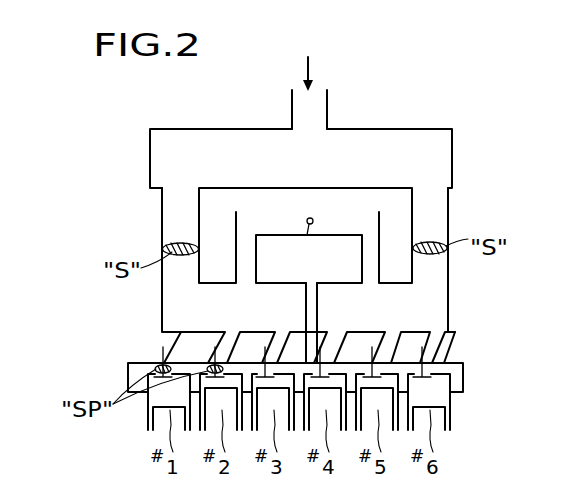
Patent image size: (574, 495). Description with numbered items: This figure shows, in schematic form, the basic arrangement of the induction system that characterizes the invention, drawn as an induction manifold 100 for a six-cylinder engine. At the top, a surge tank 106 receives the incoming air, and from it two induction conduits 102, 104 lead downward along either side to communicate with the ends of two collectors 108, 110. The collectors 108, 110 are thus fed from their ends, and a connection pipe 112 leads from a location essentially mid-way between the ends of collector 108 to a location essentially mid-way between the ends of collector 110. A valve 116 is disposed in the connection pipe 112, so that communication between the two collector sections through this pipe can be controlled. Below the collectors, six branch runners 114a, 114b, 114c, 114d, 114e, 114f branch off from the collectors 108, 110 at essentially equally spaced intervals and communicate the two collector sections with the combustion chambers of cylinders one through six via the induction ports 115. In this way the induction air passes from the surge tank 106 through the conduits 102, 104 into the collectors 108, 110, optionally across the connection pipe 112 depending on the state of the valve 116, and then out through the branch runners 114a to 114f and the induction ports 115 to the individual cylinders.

The induction manifold 100 is at (135, 155).
The induction conduit 102 is at (173, 235).
The induction conduit 104 is at (437, 207).
The surge tank 106 is at (441, 157).
The collector 108 is at (223, 288).
The collector 110 is at (398, 288).
The connection pipe 112 is at (243, 228).
The branch runner 114a is at (174, 345).
The branch runner 114b is at (232, 340).
The branch runner 114c is at (288, 342).
The branch runner 114d is at (342, 342).
The branch runner 114e is at (396, 342).
The branch runner 114f is at (437, 340).
The induction port 115 is at (380, 370).
The valve 116 is at (305, 223).